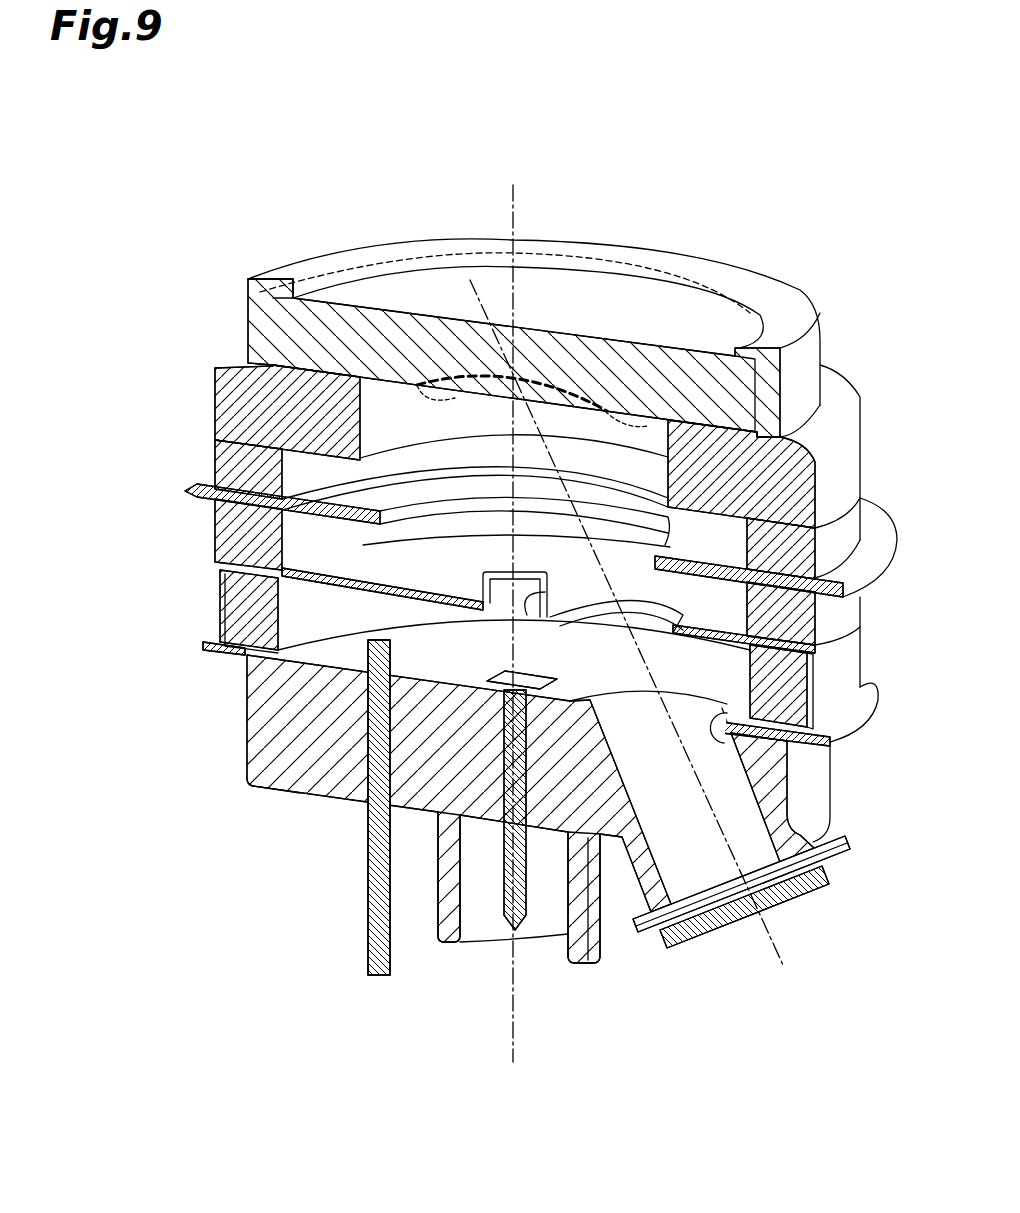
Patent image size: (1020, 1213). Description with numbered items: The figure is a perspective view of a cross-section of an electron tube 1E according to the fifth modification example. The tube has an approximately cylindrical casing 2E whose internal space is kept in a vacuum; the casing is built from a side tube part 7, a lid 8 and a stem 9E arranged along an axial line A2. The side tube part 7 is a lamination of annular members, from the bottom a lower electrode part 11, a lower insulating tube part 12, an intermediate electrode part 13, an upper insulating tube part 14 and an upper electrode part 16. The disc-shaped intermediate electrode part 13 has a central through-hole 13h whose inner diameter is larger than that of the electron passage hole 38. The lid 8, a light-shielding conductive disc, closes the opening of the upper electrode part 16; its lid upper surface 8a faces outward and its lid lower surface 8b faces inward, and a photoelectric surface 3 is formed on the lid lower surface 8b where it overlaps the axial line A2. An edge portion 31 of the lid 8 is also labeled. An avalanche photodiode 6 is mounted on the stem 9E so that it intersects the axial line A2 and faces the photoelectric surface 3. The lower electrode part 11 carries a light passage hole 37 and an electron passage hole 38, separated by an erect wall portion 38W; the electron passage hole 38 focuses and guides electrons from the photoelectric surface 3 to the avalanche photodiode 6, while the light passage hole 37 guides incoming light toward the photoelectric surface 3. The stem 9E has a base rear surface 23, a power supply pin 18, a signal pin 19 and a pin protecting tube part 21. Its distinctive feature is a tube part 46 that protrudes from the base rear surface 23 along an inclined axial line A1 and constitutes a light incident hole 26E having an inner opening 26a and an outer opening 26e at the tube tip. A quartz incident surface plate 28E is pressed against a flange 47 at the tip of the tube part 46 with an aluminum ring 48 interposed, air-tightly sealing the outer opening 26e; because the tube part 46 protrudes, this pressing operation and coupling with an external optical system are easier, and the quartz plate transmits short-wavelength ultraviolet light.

The electron tube 1E is at (792, 143).
The housing 2E is at (450, 597).
The photoelectric surface 3 is at (420, 384).
The lid 8 is at (722, 320).
The lid upper surface 8a is at (563, 290).
The lid lower surface 8b is at (625, 425).
The rim flange 31 is at (248, 290).
The side tube part 7 is at (450, 555).
The upper electrode part 16 is at (215, 378).
The upper insulating tube part 14 is at (215, 455).
The intermediate electrode part 13 is at (185, 494).
The through-hole 13h is at (405, 515).
The lower insulating tube part 12 is at (215, 545).
The lower electrode part 11 is at (487, 658).
The stem 9E is at (467, 845).
The base rear surface 23 is at (280, 790).
The power supply pin 18 is at (368, 900).
The avalanche photodiode 6 is at (485, 662).
The signal pin 19 is at (505, 912).
The pin protecting tube part 21 is at (437, 925).
The tube part 46 is at (620, 907).
The light passage hole 37 is at (632, 613).
The electron passage hole 38 is at (478, 585).
The wall portion 38W is at (525, 600).
The light incident hole 26E is at (780, 874).
The inner opening 26a is at (712, 745).
The outer opening 26e is at (700, 935).
The incident surface plate 28E is at (780, 930).
The flange 47 is at (852, 843).
The aluminum ring 48 is at (853, 860).
The axial line A1 is at (785, 968).
The axial line A2 is at (510, 1028).